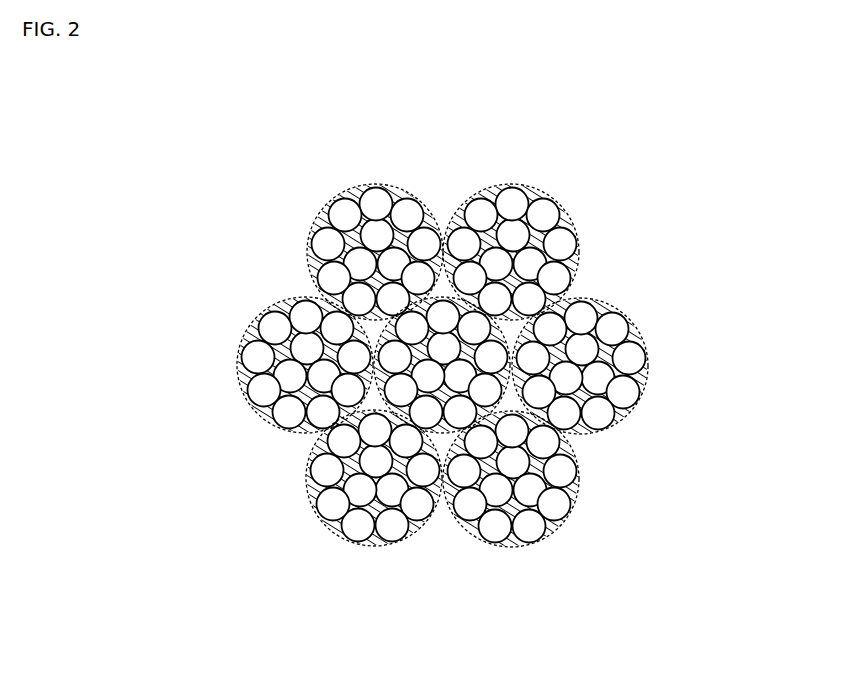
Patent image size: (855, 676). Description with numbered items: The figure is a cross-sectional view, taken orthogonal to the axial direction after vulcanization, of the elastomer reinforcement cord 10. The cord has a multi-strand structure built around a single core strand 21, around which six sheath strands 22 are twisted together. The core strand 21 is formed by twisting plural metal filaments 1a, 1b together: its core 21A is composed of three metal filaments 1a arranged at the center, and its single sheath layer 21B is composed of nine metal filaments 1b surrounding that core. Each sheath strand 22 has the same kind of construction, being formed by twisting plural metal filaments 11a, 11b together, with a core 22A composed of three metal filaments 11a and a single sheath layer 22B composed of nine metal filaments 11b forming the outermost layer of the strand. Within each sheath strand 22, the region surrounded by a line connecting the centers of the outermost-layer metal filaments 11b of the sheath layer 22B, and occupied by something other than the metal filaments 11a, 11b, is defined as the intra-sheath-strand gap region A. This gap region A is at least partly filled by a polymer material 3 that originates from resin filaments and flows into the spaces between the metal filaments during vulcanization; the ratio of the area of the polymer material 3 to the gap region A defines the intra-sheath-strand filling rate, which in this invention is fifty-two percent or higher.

The elastomer reinforcement cord 10 is at (406, 363).
The core strand 21 is at (287, 311).
The sheath strand 22 is at (323, 209).
The metal filament 1a is at (255, 437).
The metal filament 1b is at (408, 210).
The polymer material 3 is at (509, 202).
The intra-sheath-strand gap region A is at (577, 176).
The metal filament 11a is at (655, 330).
The metal filament 11b is at (657, 276).
The core 21A is at (420, 521).
The sheath layer 21B is at (531, 525).
The core 22A is at (649, 457).
The sheath layer 22B is at (629, 361).